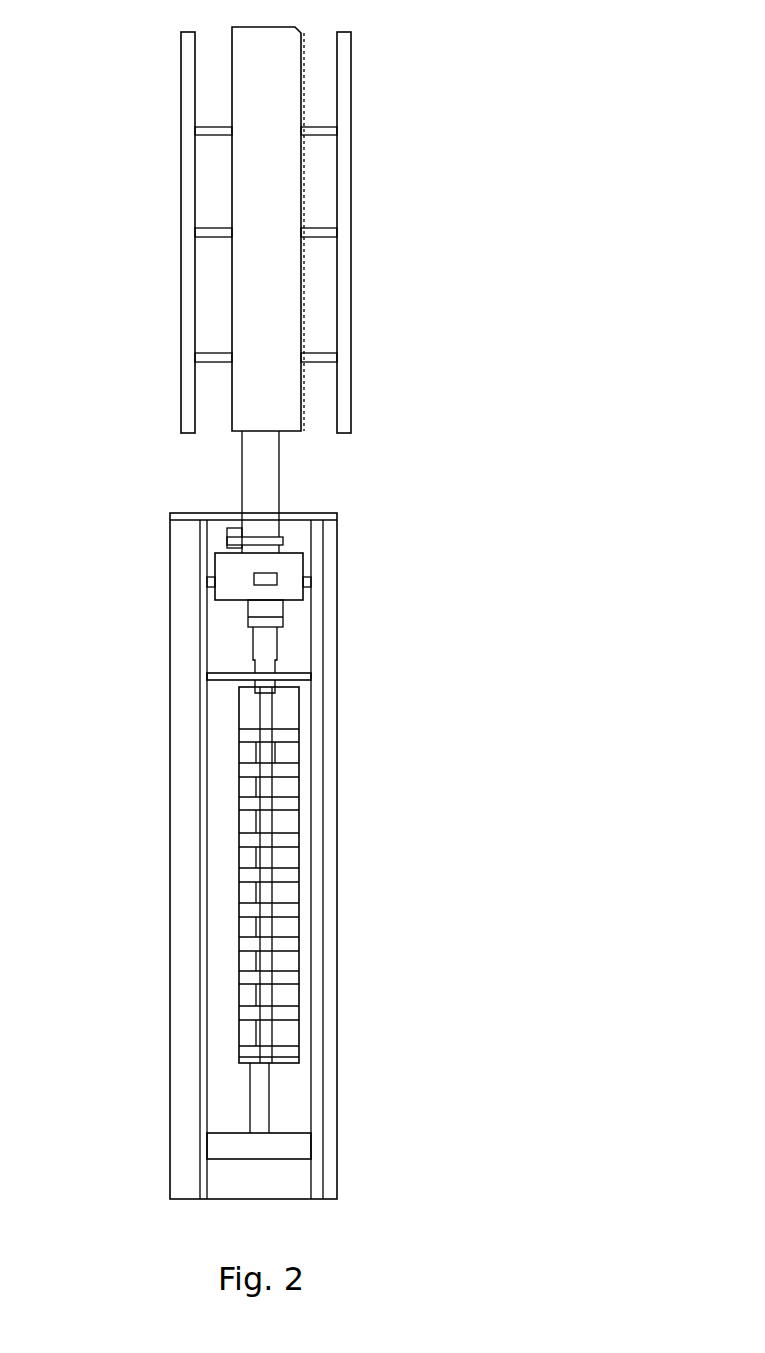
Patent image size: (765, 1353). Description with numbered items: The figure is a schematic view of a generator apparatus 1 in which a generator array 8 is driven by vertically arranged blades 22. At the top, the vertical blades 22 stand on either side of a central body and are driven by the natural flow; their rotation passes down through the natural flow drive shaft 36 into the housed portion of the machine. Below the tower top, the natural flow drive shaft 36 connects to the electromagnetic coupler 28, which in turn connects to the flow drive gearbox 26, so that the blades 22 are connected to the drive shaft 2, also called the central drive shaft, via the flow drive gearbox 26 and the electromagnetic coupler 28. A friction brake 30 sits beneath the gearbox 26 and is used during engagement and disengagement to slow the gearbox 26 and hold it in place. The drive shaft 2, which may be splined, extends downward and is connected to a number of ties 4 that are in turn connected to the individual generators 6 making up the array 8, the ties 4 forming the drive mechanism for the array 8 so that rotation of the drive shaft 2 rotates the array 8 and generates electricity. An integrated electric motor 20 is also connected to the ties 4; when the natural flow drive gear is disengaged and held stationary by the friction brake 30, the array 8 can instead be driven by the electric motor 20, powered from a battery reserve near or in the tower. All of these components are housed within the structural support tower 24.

The generator apparatus 1 is at (100, 88).
The blades 22 is at (181, 392).
The natural flow drive shaft 36 is at (262, 463).
The electromagnetic coupler 28 is at (265, 540).
The flow drive gearbox 26 is at (232, 572).
The friction brake 30 is at (283, 601).
The drive shaft 2 is at (265, 665).
The structural support tower 24 is at (185, 688).
The generator array 8 is at (165, 708).
The individual generators 6 is at (288, 803).
The ties 4 is at (273, 788).
The integrated electric motor 20 is at (247, 1017).